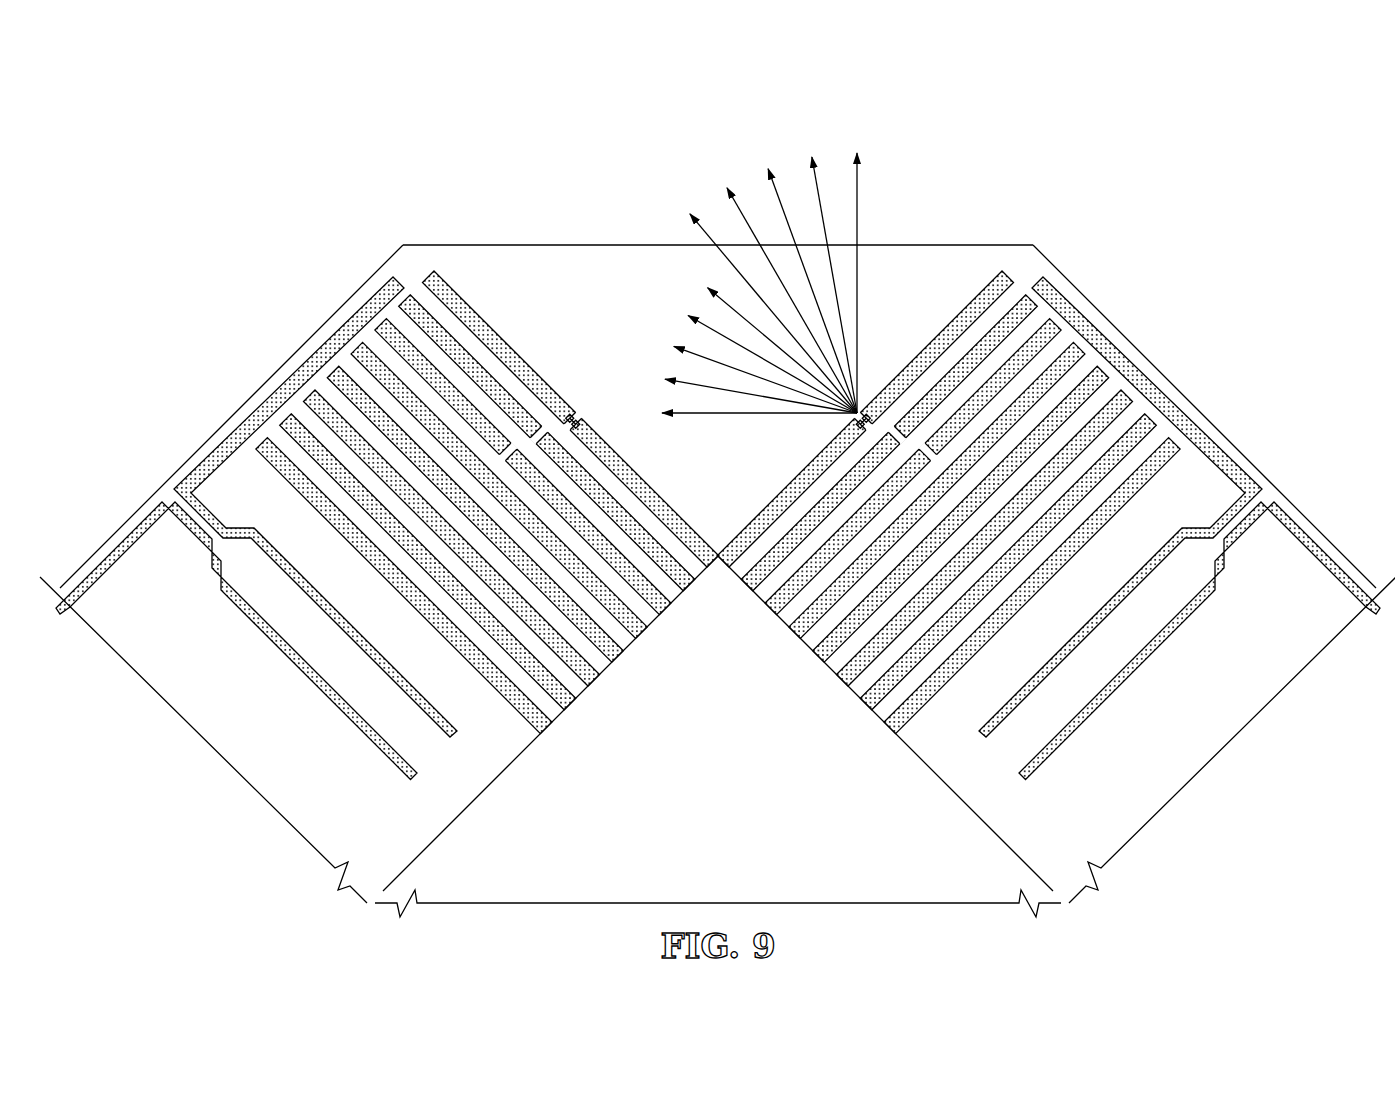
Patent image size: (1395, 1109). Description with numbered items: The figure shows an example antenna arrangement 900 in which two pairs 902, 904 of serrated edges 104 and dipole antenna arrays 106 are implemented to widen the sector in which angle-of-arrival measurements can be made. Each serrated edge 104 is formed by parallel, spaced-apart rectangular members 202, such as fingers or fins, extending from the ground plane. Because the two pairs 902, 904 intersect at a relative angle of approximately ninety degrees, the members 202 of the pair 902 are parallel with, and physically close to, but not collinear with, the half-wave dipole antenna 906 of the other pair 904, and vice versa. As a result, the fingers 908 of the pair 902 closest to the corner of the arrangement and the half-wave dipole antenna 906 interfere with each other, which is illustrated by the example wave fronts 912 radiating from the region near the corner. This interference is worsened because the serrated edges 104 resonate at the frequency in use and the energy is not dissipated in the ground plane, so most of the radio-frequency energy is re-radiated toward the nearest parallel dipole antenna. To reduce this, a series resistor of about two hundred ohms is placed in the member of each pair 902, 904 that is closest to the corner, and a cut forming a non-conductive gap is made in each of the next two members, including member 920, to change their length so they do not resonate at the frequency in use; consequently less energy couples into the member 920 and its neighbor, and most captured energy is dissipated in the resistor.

The antenna arrangement 900 is at (349, 104).
The pair of serrated edge and dipole antenna array 902 is at (1044, 502).
The pair of serrated edge and dipole antenna array 904 is at (116, 348).
The half-wave dipole antenna 906 is at (281, 377).
The fingers 908 is at (1022, 283).
The wave fronts 912 is at (648, 180).
The member 920 is at (750, 577).
The serrated edge 104 is at (570, 748).
The dipole antenna array 106 is at (156, 467).
The rectangular members 202 is at (133, 584).